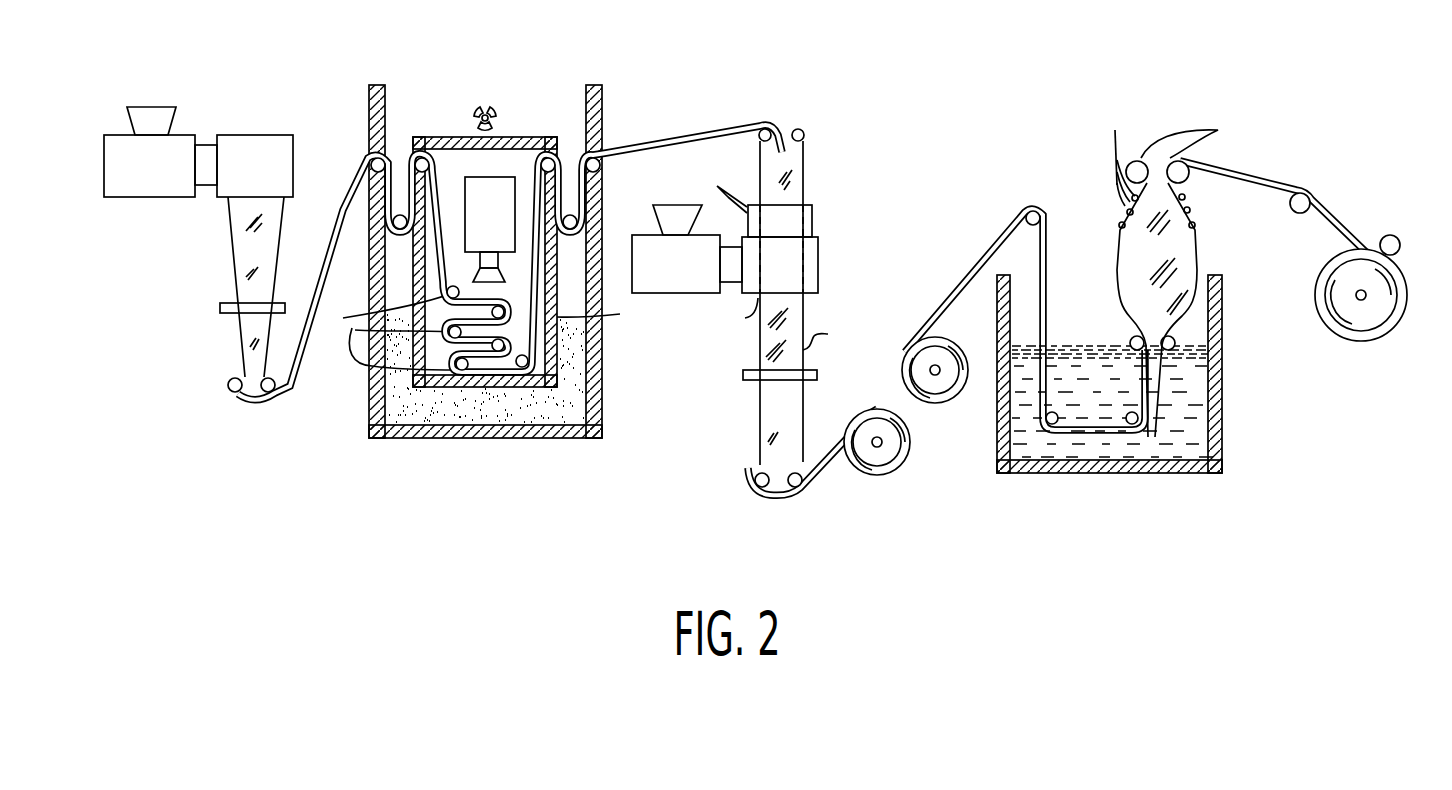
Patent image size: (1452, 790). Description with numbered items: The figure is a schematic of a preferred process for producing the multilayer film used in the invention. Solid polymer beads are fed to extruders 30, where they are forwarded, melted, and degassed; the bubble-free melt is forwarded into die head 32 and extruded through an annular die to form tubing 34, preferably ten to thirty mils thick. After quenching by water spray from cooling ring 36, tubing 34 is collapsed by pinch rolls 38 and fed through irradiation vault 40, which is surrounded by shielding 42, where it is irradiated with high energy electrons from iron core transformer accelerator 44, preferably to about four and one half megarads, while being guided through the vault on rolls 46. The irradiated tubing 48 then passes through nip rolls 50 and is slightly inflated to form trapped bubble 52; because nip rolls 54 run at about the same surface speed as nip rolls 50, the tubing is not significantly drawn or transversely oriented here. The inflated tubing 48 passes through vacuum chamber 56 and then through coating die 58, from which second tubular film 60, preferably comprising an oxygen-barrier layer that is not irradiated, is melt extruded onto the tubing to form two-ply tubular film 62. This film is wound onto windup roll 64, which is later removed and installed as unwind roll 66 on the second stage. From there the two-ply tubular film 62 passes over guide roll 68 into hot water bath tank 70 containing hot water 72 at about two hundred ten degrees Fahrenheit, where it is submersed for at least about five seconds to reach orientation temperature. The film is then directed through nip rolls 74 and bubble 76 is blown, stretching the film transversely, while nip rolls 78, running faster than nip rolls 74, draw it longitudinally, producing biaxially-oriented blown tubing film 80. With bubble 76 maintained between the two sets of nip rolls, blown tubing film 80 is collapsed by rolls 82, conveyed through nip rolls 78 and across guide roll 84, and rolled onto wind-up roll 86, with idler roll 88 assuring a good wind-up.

The extruder 30 is at (180, 138).
The die head 32 is at (257, 150).
The tubing 34 is at (228, 228).
The cooling ring 36 is at (220, 306).
The pinch rolls 38 is at (228, 378).
The irradiation vault 40 is at (498, 331).
The shielding 42 is at (450, 424).
The iron core transformer accelerator 44 is at (475, 177).
The filament 46 is at (510, 262).
The irradiated tubing 48 is at (700, 128).
The nip rolls 50 is at (800, 130).
The trapped bubble 52 is at (800, 180).
The nip rolls 54 is at (747, 472).
The vacuum chamber 56 is at (818, 218).
The coating die 58 is at (818, 268).
The second tubular film 60 is at (760, 360).
The two-ply tubular film 62 is at (1075, 237).
The windup roll 64 is at (870, 477).
The unwind roll 66 is at (959, 396).
The guide roll 68 is at (1023, 207).
The hot water bath tank 70 is at (1233, 435).
The hot water 72 is at (1215, 310).
The nip rolls 74 is at (1133, 338).
The bubble 76 is at (1197, 245).
The nip rolls 78 is at (1310, 137).
The blown tubing film 80 is at (1312, 182).
The rolls 82 is at (1164, 142).
The guide roll 84 is at (1390, 235).
The wind-up roll 86 is at (1371, 342).
The idler roll 88 is at (1428, 150).